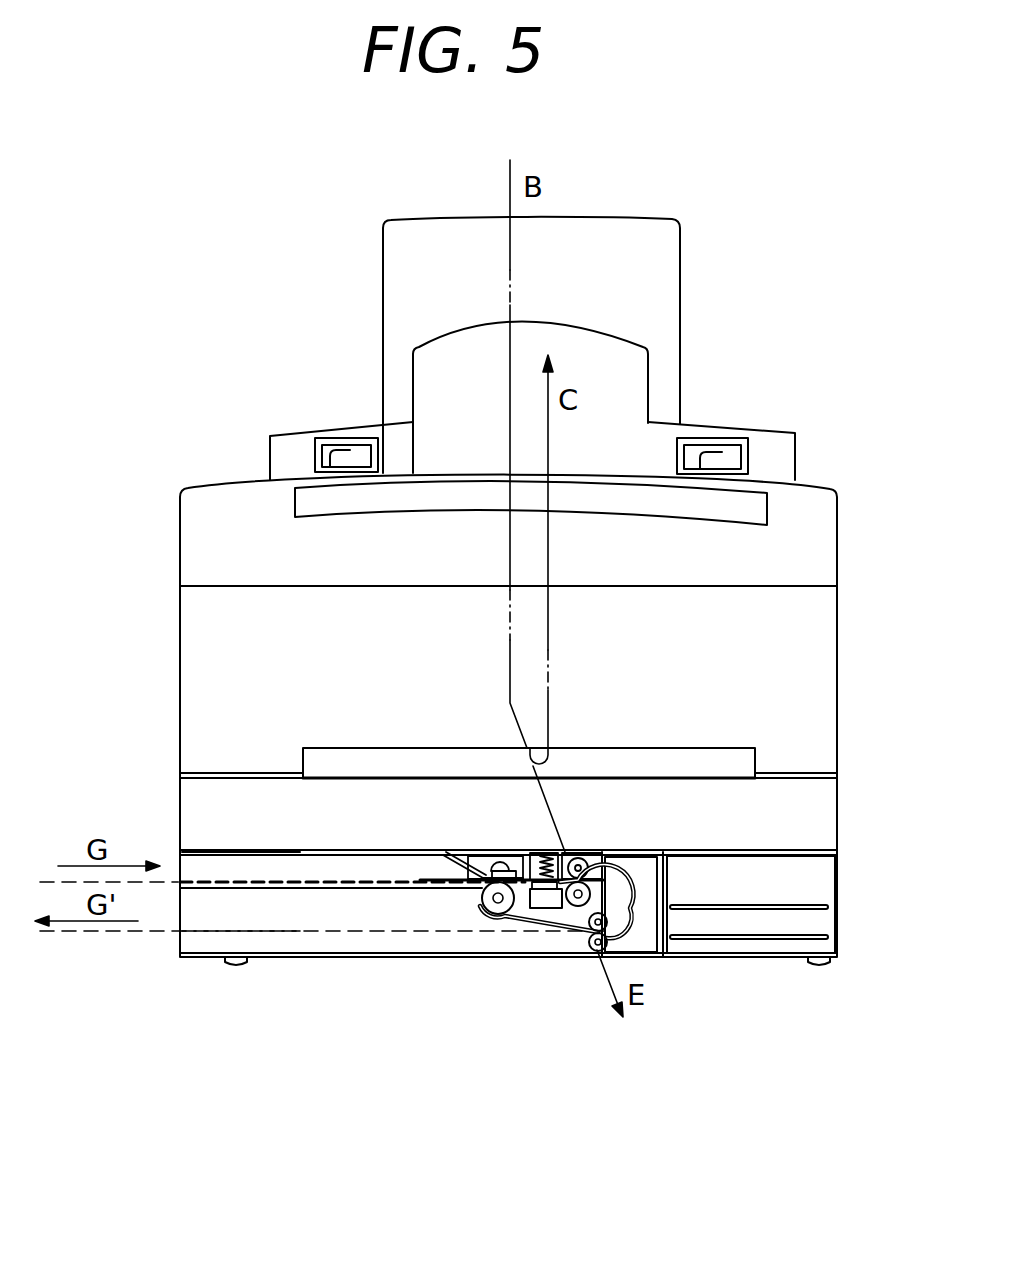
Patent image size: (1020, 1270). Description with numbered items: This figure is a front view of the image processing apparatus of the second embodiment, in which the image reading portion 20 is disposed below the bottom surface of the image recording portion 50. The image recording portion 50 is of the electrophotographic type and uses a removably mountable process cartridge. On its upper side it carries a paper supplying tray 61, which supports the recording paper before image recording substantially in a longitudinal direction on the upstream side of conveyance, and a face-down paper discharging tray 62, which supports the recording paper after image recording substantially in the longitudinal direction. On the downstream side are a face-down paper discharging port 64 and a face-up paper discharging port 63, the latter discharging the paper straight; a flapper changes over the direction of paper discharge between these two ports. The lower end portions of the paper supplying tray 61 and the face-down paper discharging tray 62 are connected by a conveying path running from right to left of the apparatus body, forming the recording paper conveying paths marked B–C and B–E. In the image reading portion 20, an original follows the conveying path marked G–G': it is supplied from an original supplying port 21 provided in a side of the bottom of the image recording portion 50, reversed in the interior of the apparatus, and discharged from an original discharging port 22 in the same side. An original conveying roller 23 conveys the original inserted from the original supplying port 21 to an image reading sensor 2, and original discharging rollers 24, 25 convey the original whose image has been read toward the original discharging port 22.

The image recording portion 50 is at (228, 471).
The paper supplying tray 61 is at (675, 262).
The face-down paper discharging tray 62 is at (640, 375).
The face-down paper discharging port 64 is at (735, 502).
The face-up paper discharging port 63 is at (725, 758).
The original supplying port 21 is at (225, 862).
The original discharging port 22 is at (227, 913).
The original conveying roller 23 is at (485, 905).
The image reading sensor 2 is at (535, 900).
The original discharging roller 24 is at (578, 897).
The original discharging roller 25 is at (598, 944).
The image reading portion 20 is at (510, 974).